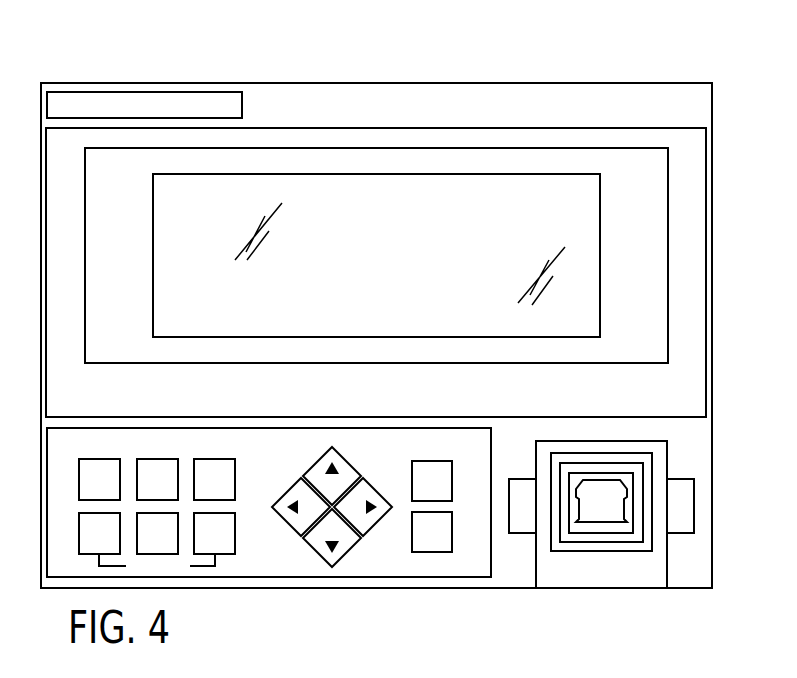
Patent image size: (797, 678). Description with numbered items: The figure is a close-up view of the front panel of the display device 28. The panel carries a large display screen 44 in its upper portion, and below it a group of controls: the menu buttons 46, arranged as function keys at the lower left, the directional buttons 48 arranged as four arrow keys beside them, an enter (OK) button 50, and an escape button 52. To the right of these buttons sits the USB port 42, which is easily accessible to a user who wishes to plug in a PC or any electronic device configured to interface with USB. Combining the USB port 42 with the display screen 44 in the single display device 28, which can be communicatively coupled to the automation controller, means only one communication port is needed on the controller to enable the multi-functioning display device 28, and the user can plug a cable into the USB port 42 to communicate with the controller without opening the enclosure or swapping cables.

The display device 28 is at (680, 47).
The USB port 42 is at (600, 522).
The display screen 44 is at (600, 257).
The menu buttons 46 is at (268, 578).
The directional buttons 48 is at (345, 553).
The enter button 50 is at (432, 552).
The escape button 52 is at (452, 498).